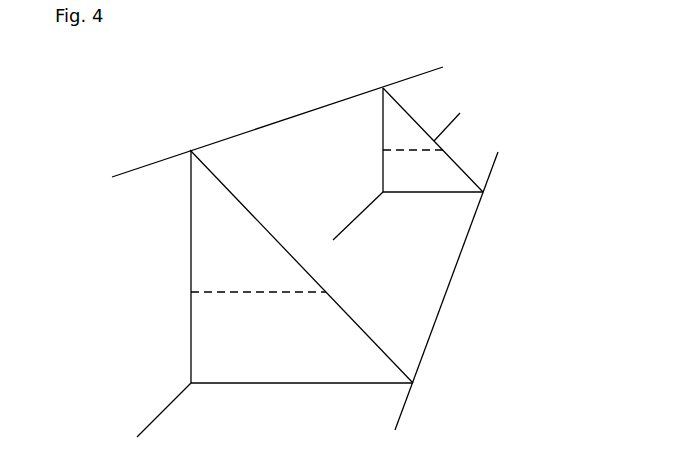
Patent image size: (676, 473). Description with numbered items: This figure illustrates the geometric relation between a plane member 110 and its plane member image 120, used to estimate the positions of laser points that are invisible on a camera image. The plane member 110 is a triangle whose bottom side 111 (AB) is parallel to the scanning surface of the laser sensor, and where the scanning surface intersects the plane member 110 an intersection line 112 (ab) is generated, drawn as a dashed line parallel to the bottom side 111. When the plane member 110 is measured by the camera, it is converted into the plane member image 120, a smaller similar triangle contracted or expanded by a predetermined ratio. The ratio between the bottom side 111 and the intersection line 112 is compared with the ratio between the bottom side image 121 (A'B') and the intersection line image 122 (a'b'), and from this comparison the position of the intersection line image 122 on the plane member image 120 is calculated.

The plane member 110 is at (178, 231).
The bottom side 111 is at (302, 384).
The intersection line 112 is at (232, 293).
The plane member image 120 is at (373, 107).
The bottom side image 121 is at (453, 192).
The intersection line image 122 is at (407, 152).